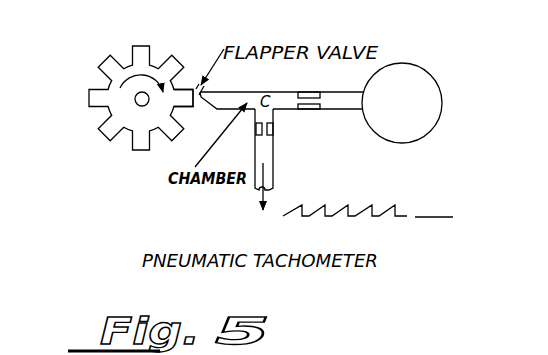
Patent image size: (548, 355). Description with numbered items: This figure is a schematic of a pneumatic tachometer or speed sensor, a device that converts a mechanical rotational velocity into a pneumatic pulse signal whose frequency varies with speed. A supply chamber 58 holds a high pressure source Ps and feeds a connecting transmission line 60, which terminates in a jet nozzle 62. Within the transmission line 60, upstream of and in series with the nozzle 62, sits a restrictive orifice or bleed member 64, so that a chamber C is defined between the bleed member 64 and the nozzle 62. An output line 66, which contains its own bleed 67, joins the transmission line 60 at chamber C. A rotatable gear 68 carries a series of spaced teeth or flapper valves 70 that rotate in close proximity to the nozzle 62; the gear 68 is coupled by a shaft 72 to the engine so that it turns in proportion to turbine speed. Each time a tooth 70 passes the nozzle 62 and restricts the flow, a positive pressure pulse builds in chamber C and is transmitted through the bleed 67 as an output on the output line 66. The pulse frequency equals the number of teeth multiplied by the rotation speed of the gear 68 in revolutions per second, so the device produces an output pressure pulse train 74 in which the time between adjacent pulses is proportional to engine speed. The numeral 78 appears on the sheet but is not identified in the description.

The supply chamber 58 is at (431, 75).
The connecting transmission line 60 is at (294, 90).
The jet nozzle 62 is at (202, 93).
The restrictive orifice or bleed member 64 is at (315, 110).
The output line 66 is at (274, 157).
The bleed 67 is at (274, 132).
The rotatable gear 68 is at (152, 70).
The teeth or flapper valves 70 is at (187, 91).
The shaft 72 is at (135, 101).
The output pressure pulse train 74 is at (399, 214).
The pneumatic tachometer 78 is at (493, 345).